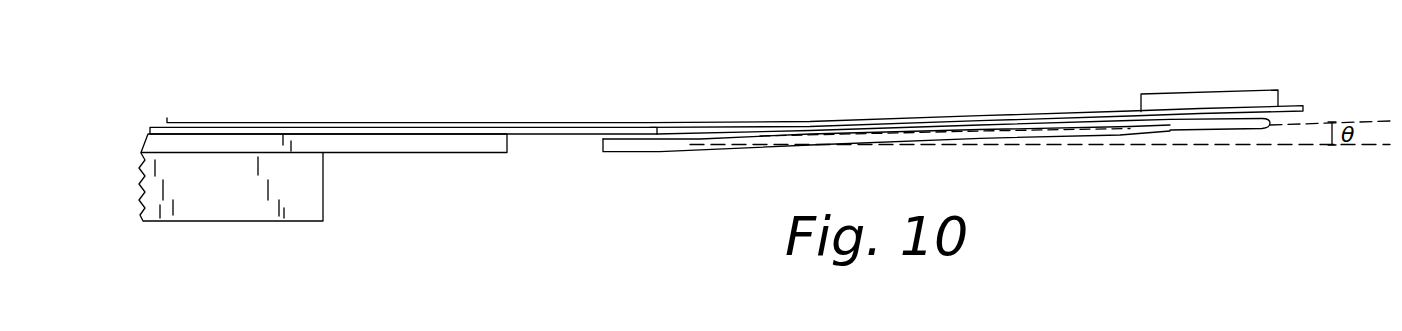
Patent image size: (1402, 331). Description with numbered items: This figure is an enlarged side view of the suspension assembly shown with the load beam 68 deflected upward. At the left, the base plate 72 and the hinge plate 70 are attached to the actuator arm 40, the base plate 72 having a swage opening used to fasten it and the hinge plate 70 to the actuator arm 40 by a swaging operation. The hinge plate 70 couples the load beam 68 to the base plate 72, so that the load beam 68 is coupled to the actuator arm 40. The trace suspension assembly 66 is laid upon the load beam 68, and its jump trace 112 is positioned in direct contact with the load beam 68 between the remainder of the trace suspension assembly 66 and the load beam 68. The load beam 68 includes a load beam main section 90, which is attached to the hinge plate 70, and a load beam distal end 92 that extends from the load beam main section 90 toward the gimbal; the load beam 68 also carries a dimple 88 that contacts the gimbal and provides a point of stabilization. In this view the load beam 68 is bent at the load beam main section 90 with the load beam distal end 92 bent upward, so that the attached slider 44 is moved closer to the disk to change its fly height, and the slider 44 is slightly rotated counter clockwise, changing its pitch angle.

The actuator arm 40 is at (222, 220).
The base plate 72 is at (403, 153).
The hinge plate 70 is at (543, 135).
The trace suspension assembly 66 is at (458, 122).
The jump trace 112 is at (712, 132).
The load beam 68 is at (652, 150).
The dimple 88 is at (1250, 122).
The slider 44 is at (1187, 95).
The load beam main section 90 is at (820, 143).
The load beam distal end 92 is at (1160, 130).